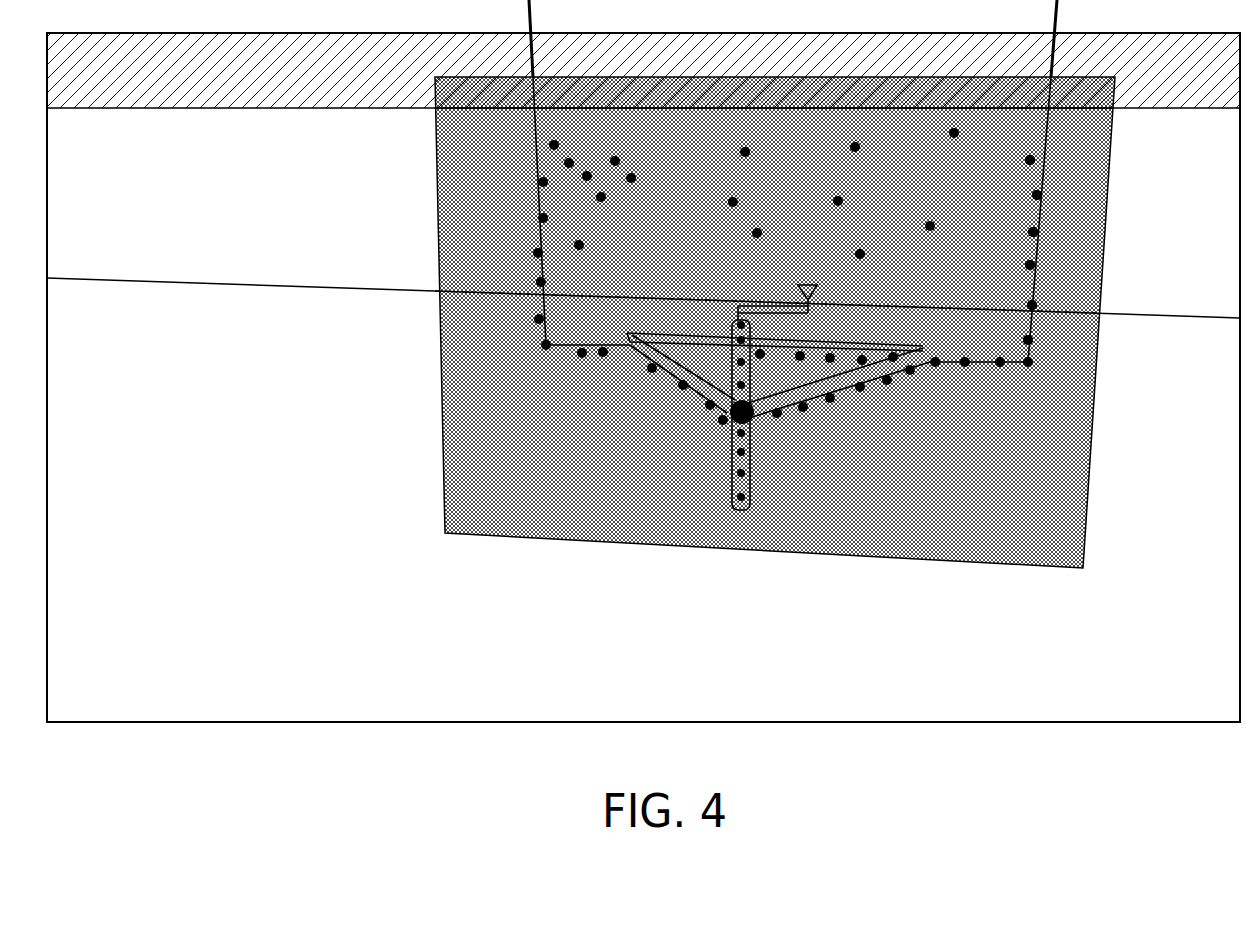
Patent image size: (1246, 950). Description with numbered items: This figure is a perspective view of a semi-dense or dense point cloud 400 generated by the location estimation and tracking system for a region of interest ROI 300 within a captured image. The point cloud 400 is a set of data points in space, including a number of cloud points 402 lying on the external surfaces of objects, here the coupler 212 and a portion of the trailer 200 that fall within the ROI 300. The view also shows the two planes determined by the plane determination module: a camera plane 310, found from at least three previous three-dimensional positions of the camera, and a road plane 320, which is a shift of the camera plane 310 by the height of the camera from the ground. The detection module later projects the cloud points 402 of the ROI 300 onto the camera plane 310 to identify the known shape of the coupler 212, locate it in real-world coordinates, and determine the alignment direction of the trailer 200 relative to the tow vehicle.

The trailer 200 is at (703, 160).
The coupler 212 is at (752, 415).
The region of interest 300 is at (1093, 433).
The camera plane 310 is at (243, 75).
The road plane 320 is at (260, 565).
The point cloud 400 is at (1182, 148).
The cloud points 402 is at (1033, 232).